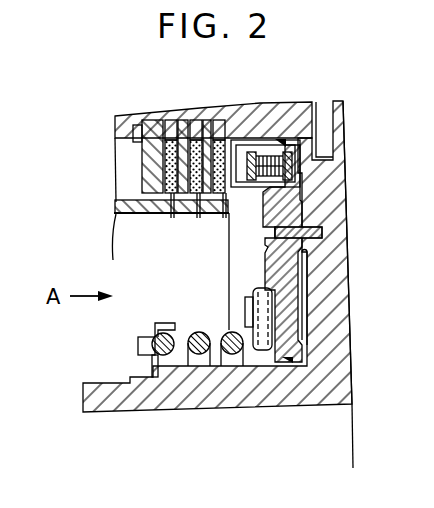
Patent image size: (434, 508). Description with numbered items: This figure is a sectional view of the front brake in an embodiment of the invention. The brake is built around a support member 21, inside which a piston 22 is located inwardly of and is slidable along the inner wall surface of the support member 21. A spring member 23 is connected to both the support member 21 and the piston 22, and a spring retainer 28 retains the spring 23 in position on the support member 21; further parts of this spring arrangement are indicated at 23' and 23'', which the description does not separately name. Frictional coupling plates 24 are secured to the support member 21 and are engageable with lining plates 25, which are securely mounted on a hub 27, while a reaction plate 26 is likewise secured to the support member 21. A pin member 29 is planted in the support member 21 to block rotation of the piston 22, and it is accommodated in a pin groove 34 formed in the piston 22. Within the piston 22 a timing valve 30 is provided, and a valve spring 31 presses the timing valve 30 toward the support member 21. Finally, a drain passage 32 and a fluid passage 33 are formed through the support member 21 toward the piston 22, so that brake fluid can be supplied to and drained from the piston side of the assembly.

The support member 21 is at (281, 118).
The piston 22 is at (295, 285).
The spring member 23 is at (215, 325).
The pin 23' is at (254, 305).
The bracket 23'' is at (122, 354).
The frictional coupling plates 24 is at (214, 120).
The lining plates 25 is at (219, 214).
The reaction plate 26 is at (147, 128).
The hub 27 is at (136, 207).
The spring retainer 28 is at (161, 322).
The pin member 29 is at (324, 226).
The timing valve 30 is at (333, 178).
The valve spring 31 is at (243, 155).
The drain passage 32 is at (282, 140).
The fluid passage 33 is at (340, 118).
The pin groove 34 is at (306, 249).